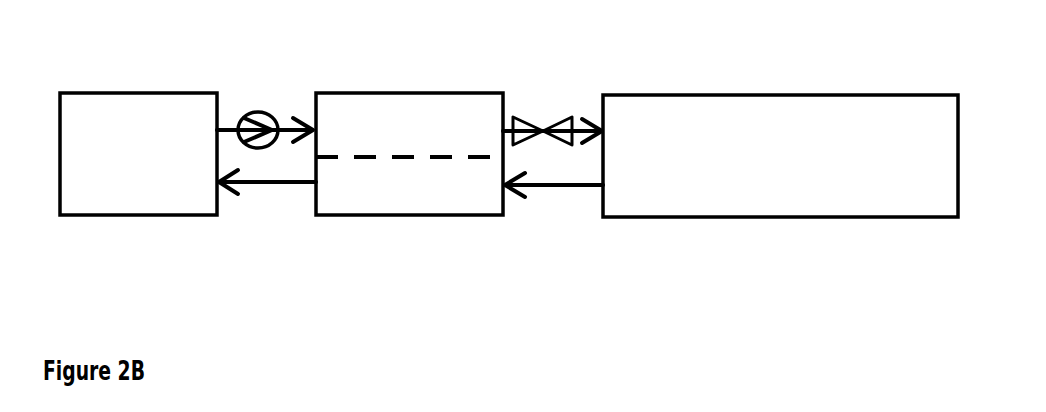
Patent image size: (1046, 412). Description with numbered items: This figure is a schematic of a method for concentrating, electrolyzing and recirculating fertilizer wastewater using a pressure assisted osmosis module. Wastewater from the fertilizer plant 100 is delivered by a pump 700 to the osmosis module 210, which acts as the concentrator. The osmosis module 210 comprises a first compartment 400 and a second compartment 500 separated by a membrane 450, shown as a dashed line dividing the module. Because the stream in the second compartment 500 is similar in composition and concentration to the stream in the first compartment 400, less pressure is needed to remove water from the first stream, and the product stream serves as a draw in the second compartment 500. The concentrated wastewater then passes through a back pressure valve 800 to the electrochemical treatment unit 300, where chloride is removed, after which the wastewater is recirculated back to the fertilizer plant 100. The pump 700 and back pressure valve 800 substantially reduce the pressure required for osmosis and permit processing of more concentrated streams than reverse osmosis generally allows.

The fertilizer plant 100 is at (138, 154).
The osmosis module 210 is at (409, 170).
The electrochemical treatment unit 300 is at (780, 156).
The first compartment 400 is at (409, 125).
The membrane 450 is at (440, 152).
The second compartment 500 is at (409, 186).
The pump 700 is at (258, 115).
The back pressure valve 800 is at (542, 116).